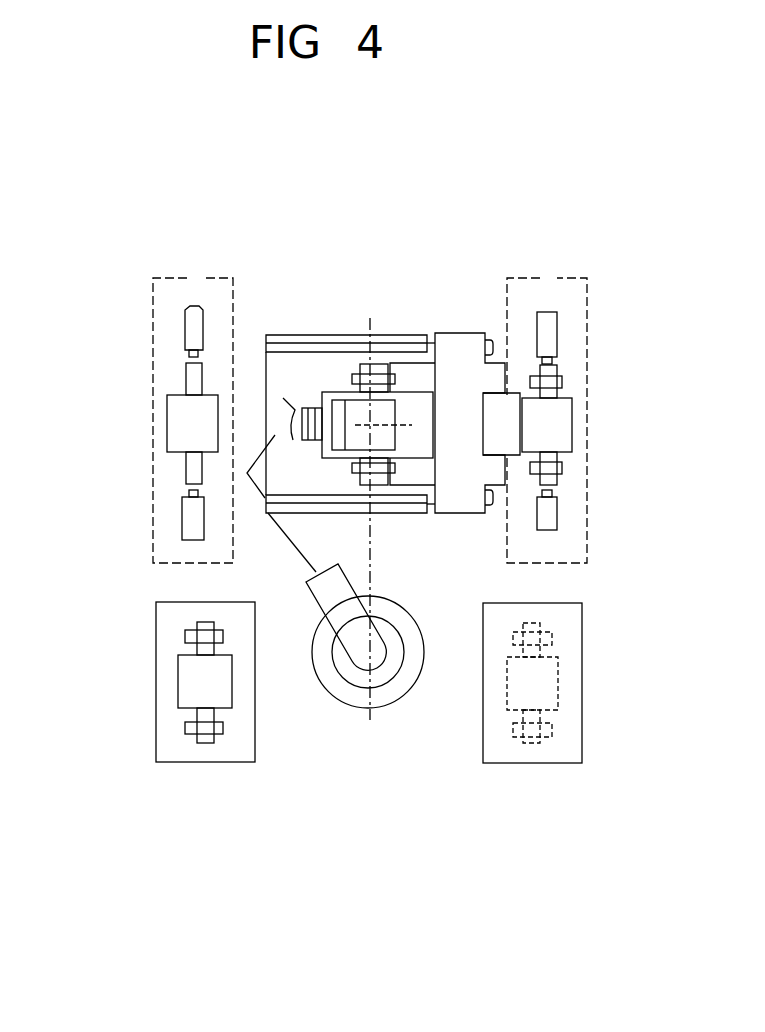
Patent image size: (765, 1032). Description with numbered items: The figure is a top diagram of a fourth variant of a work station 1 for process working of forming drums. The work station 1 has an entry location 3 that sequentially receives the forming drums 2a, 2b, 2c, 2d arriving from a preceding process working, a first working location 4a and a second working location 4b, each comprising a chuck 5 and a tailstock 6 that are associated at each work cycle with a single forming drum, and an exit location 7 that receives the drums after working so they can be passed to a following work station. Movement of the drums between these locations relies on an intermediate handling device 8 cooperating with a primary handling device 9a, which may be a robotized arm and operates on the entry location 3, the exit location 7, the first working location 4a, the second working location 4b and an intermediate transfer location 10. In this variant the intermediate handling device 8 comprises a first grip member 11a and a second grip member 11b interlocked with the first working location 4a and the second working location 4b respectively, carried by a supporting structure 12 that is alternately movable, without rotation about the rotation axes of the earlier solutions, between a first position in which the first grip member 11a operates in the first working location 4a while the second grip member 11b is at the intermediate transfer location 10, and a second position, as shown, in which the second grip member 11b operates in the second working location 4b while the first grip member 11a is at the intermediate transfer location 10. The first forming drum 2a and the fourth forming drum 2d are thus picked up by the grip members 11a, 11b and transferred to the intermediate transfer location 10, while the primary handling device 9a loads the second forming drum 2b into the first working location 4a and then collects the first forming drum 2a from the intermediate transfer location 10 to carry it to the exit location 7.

The work station 1 is at (583, 157).
The first forming drum 2a is at (352, 412).
The second forming drum 2b is at (197, 421).
The third forming drum 2c is at (200, 687).
The fourth forming drum 2d is at (553, 428).
The entry location 3 is at (175, 748).
The first working location 4a is at (175, 278).
The second working location 4b is at (573, 278).
The chuck 5 is at (190, 516).
The tailstock 6 is at (190, 325).
The exit location 7 is at (563, 750).
The intermediate handling device 8 is at (470, 333).
The primary handling device 9a is at (387, 673).
The intermediate transfer location 10 is at (387, 515).
The first grip member 11a is at (366, 380).
The second grip member 11b is at (553, 382).
The supporting structure 12 is at (449, 353).